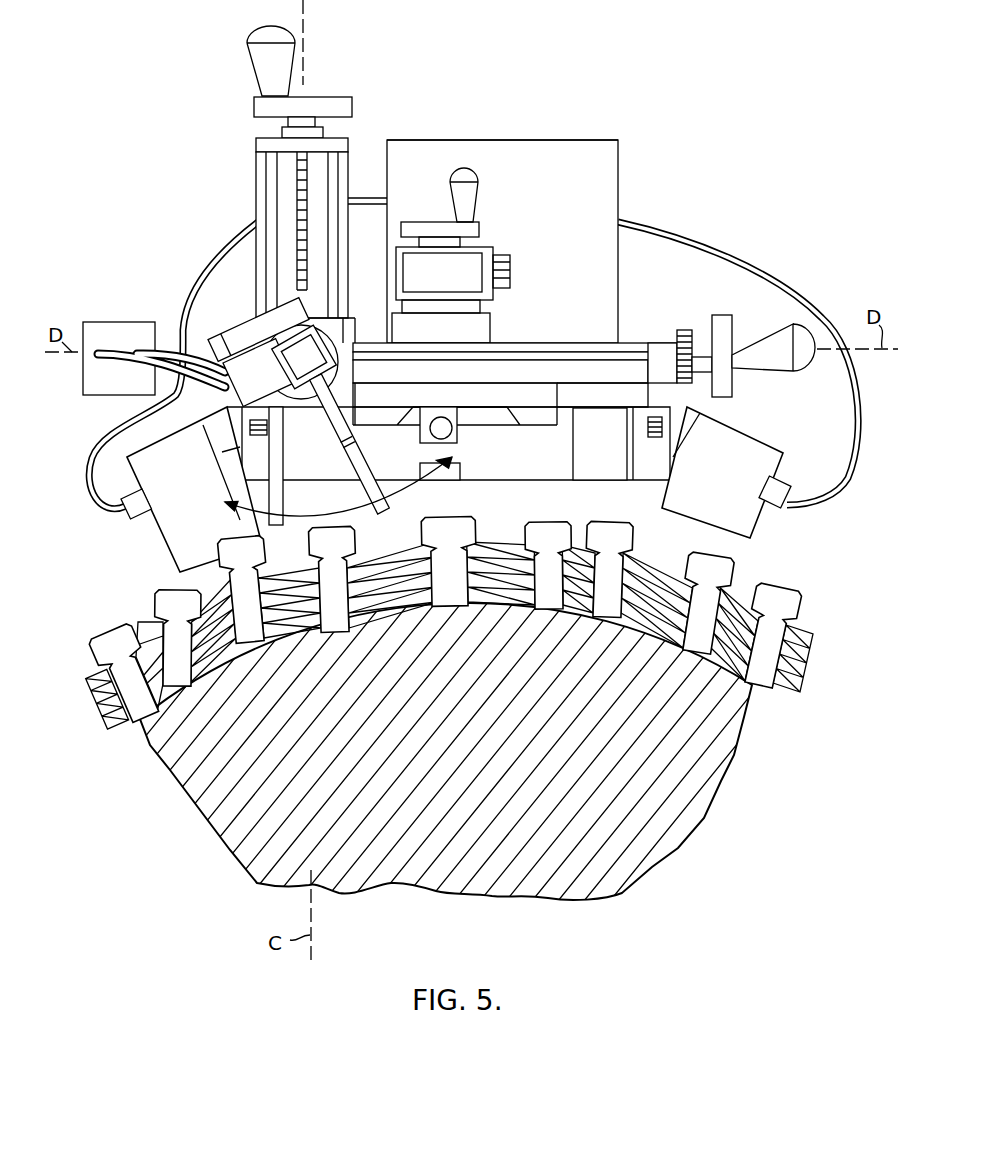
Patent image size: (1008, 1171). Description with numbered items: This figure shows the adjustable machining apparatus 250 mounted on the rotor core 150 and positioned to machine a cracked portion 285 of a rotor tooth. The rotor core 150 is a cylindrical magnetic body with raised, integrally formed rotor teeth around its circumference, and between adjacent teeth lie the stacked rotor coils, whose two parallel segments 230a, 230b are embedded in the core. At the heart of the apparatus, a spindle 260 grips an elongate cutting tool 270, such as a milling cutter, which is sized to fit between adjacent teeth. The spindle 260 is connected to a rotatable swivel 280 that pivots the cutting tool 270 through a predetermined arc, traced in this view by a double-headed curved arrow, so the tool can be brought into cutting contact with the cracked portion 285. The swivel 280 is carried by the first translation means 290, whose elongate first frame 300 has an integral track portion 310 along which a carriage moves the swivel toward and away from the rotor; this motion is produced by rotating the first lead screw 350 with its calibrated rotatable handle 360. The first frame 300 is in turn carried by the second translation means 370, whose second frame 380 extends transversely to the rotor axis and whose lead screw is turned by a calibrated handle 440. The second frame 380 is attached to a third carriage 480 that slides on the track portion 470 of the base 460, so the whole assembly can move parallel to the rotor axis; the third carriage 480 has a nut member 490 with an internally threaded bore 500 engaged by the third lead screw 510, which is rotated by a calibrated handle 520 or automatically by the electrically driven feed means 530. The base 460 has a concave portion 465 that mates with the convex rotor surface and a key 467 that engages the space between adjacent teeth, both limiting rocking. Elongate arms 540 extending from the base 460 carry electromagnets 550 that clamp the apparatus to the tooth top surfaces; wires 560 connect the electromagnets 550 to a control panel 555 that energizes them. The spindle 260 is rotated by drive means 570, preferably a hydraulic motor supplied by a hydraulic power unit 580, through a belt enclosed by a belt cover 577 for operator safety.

The rotor core 150 is at (716, 802).
The parallel segment of rotor coil 230a is at (376, 598).
The parallel segment of rotor coil 230b is at (650, 612).
The adjustable machining apparatus 250 is at (536, 202).
The spindle 260 is at (294, 407).
The cutting tool 270 is at (358, 463).
The swivel 280 is at (340, 360).
The cracked portion 285 is at (377, 508).
The first translation means 290 is at (224, 225).
The first frame 300 is at (257, 148).
The track portion 310 is at (258, 174).
The first lead screw 350 is at (298, 200).
The calibrated rotatable handle 360 is at (244, 66).
The second translation means 370 is at (721, 328).
The second frame 380 is at (655, 345).
The calibrated rotatable handle 440 is at (775, 342).
The base 460 is at (635, 383).
The concave portion 465 is at (560, 494).
The key 467 is at (483, 500).
The track portion 470 is at (600, 444).
The third carriage 480 is at (517, 398).
The nut member 490 is at (430, 400).
The internally threaded bore 500 is at (422, 441).
The third lead screw 510 is at (445, 417).
The calibrated rotatable handle 520 is at (468, 200).
The automatic feed means 530 is at (489, 257).
The arm 540 is at (700, 410).
The electromagnet 550 is at (740, 462).
The control panel 555 is at (522, 143).
The electrically conducting wires 560 is at (830, 495).
The drive means 570 is at (240, 362).
The belt cover 577 is at (236, 348).
The hydraulic power unit 580 is at (120, 330).